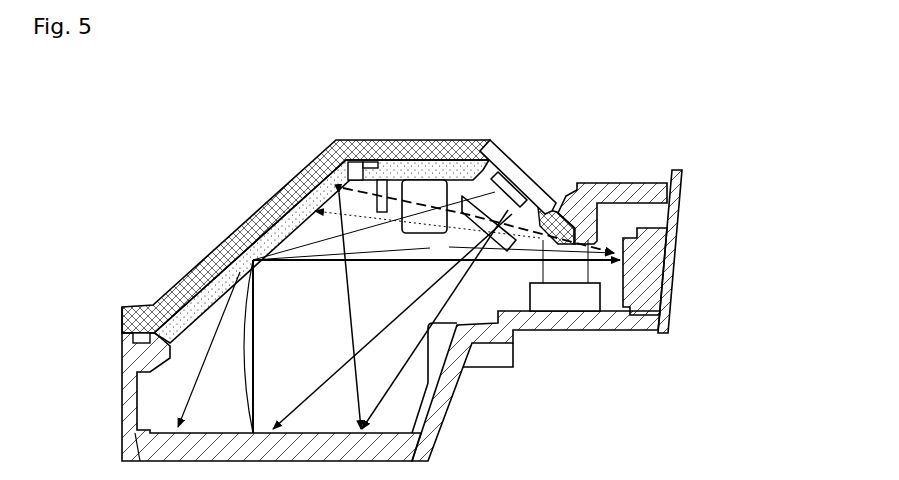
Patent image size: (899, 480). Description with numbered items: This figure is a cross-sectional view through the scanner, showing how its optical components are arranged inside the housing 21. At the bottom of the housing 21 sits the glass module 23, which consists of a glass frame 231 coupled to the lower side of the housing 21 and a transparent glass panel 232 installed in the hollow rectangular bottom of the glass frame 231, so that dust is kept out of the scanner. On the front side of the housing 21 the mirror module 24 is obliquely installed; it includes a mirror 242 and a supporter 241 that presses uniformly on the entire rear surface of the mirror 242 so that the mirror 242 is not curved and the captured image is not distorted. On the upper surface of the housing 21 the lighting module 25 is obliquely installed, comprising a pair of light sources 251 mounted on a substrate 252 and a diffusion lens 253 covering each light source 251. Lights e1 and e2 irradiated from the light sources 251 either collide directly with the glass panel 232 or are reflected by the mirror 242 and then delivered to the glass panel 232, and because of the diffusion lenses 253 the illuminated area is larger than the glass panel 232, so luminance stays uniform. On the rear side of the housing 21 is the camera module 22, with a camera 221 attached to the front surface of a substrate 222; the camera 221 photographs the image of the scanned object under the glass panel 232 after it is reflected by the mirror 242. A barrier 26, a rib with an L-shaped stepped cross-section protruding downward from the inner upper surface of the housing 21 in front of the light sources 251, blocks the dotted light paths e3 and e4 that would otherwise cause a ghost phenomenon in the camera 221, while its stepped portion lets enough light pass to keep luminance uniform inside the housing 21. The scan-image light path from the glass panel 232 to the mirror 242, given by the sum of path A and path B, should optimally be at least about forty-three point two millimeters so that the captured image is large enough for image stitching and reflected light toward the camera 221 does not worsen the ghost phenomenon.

The housing 21 is at (605, 183).
The camera module 22 is at (698, 251).
The camera 221 is at (658, 255).
The substrate 222 is at (668, 275).
The glass module 23 is at (391, 391).
The glass frame 231 is at (438, 402).
The glass panel 232 is at (395, 453).
The mirror module 24 is at (306, 220).
The supporter 241 is at (274, 200).
The mirror 242 is at (260, 128).
The lighting module 25 is at (525, 151).
The light source 251 is at (546, 180).
The substrate 252 is at (525, 174).
The diffusion lens 253 is at (507, 170).
The barrier 26 is at (390, 160).
The path A is at (242, 346).
The path B is at (433, 249).
The light e1 is at (289, 279).
The light e2 is at (311, 393).
The light path e3 is at (447, 287).
The light path e4 is at (437, 202).